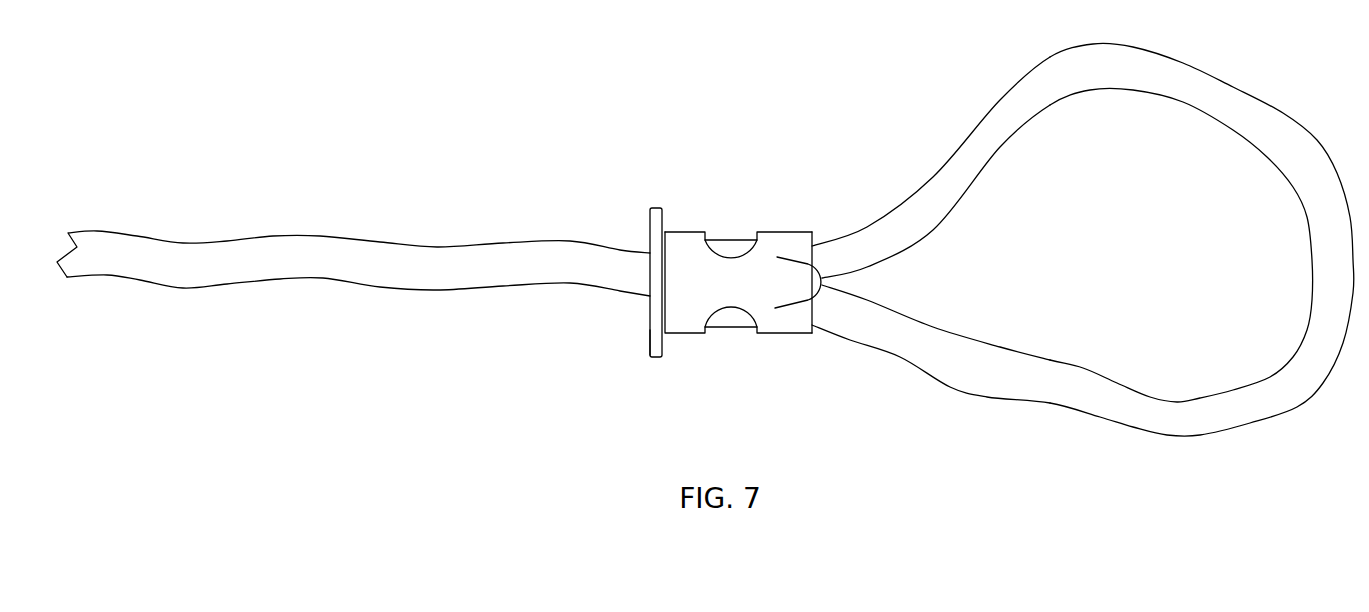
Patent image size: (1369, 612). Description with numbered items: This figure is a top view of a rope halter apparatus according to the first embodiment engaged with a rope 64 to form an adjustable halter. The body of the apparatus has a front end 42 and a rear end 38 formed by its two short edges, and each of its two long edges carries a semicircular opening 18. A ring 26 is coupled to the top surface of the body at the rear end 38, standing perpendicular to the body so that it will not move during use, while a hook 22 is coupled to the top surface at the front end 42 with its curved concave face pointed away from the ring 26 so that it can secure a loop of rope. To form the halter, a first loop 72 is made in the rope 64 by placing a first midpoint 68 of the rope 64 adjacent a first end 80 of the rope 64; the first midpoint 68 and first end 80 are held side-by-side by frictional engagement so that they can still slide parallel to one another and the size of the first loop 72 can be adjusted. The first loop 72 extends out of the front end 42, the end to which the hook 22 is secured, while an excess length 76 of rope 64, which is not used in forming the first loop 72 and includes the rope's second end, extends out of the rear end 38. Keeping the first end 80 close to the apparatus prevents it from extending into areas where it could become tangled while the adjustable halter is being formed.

The semicircular opening 18 is at (733, 258).
The hook 22 is at (805, 277).
The ring 26 is at (652, 214).
The rear end 38 is at (648, 337).
The front end 42 is at (817, 327).
The rope 64 is at (972, 375).
The first midpoint 68 is at (720, 322).
The first loop 72 is at (1193, 423).
The excess length 76 is at (342, 270).
The first end 80 is at (725, 238).